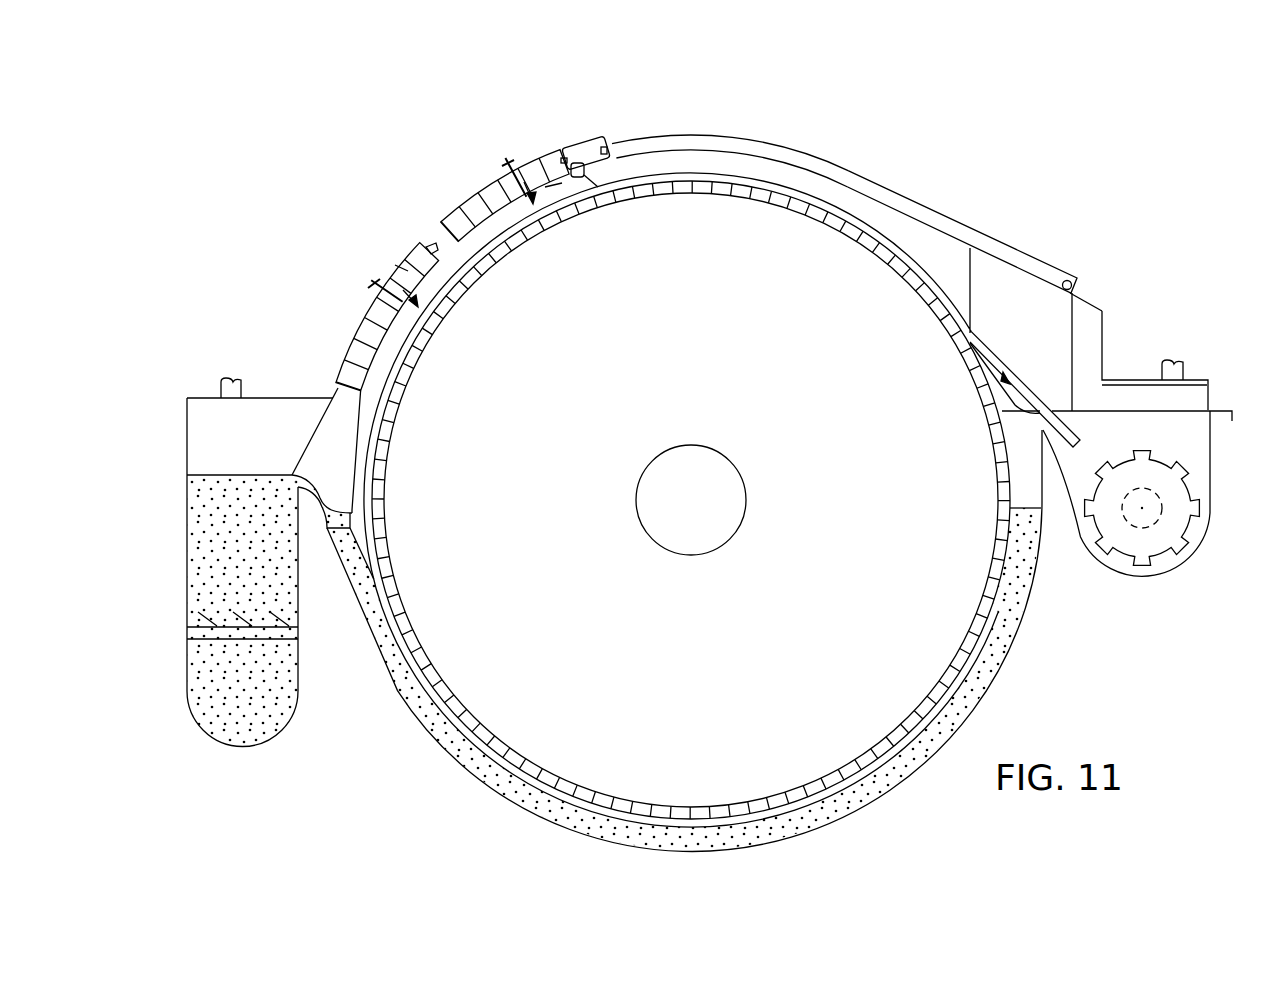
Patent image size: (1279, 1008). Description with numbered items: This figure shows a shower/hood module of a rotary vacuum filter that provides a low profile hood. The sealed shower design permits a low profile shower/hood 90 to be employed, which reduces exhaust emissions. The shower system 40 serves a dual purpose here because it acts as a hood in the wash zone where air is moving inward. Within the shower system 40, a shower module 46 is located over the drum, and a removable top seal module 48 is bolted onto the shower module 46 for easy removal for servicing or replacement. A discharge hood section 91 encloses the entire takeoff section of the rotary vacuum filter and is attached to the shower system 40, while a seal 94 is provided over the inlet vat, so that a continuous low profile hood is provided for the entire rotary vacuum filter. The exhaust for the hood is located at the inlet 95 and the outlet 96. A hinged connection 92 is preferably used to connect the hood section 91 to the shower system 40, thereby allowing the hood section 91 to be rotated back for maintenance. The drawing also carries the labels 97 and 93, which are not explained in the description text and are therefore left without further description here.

The shower system 40 is at (479, 237).
The shower module 46 is at (480, 194).
The top seal module 48 is at (582, 138).
The hinged connection 92 is at (608, 148).
The low profile shower/hood 90 is at (857, 185).
The discharge hood section 91 is at (995, 242).
The pivot 97 is at (1070, 282).
The bracket 93 is at (1130, 378).
The outlet 96 is at (1185, 368).
The seal 94 is at (273, 398).
The inlet 95 is at (220, 382).